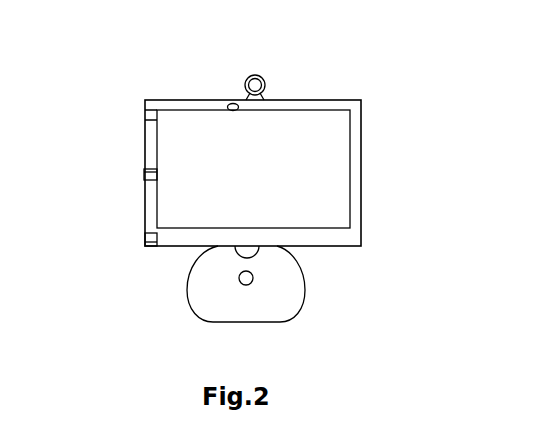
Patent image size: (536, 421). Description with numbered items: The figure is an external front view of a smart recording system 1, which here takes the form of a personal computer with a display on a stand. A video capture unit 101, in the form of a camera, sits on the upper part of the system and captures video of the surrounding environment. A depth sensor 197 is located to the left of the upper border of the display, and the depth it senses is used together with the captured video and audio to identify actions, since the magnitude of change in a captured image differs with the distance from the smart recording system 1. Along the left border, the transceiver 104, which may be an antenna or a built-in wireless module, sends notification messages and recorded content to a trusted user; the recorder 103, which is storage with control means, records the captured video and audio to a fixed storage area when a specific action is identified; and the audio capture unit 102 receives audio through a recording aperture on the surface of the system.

The smart recording system 1 is at (373, 187).
The video capture unit 101 is at (258, 76).
The audio capture unit 102 is at (151, 247).
The recorder 103 is at (144, 174).
The transceiver 104 is at (157, 85).
The depth sensor 197 is at (229, 105).